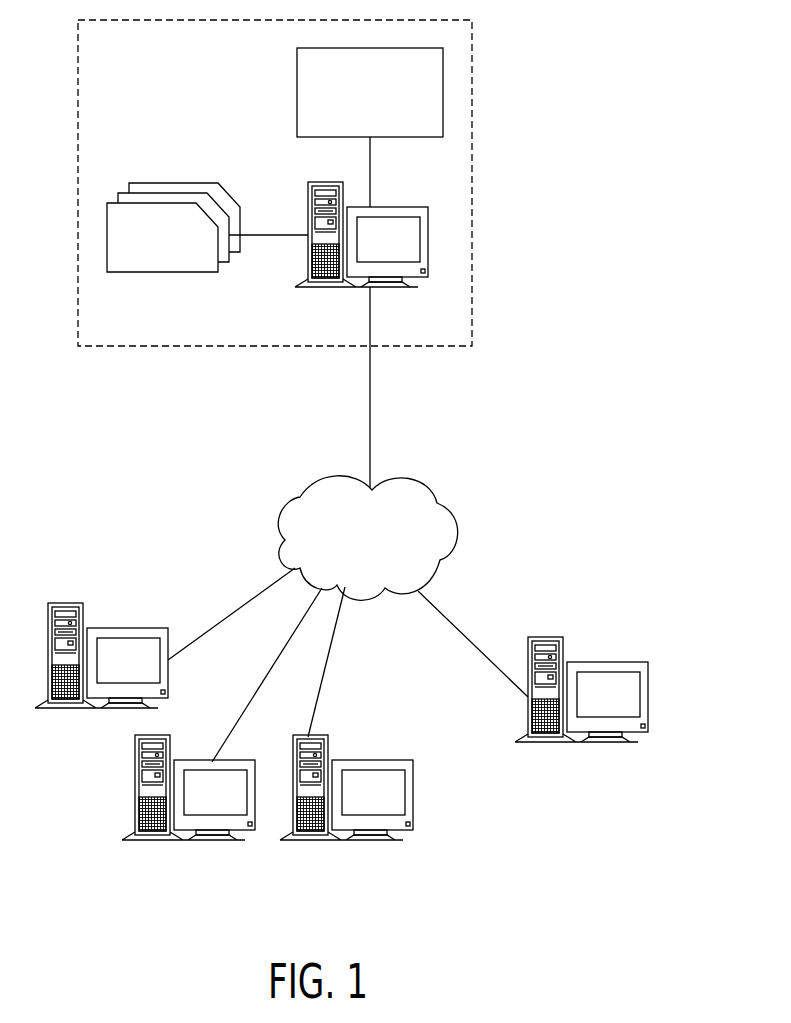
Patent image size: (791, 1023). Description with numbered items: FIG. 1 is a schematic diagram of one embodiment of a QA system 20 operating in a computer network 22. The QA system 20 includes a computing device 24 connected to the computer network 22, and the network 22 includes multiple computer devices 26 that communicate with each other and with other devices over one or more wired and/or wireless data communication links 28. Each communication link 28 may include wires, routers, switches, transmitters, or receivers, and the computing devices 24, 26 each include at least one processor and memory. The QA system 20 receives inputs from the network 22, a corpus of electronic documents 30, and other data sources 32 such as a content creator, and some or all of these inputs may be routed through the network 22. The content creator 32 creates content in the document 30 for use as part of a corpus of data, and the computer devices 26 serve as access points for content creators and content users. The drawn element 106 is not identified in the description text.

The QA system 20 is at (66, 150).
The computer network 22 is at (268, 512).
The computing device 24 is at (421, 280).
The computer devices 26 is at (83, 712).
The data communication links 28 is at (369, 170).
The corpus of electronic documents 30 is at (172, 222).
The other data sources 32 is at (297, 87).
The document 106 is at (128, 258).